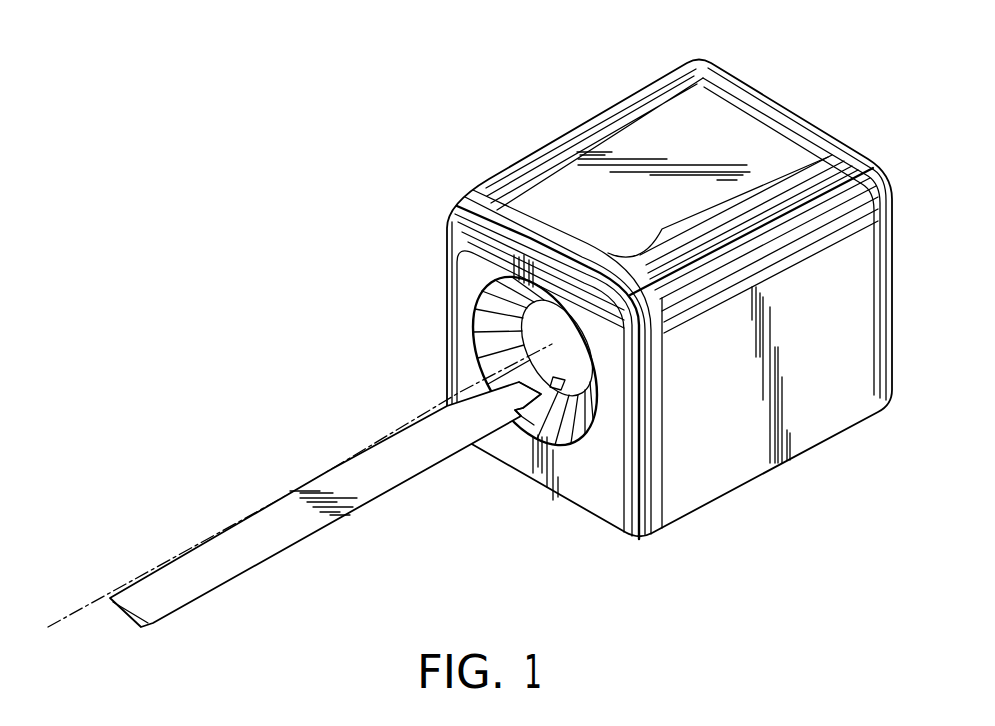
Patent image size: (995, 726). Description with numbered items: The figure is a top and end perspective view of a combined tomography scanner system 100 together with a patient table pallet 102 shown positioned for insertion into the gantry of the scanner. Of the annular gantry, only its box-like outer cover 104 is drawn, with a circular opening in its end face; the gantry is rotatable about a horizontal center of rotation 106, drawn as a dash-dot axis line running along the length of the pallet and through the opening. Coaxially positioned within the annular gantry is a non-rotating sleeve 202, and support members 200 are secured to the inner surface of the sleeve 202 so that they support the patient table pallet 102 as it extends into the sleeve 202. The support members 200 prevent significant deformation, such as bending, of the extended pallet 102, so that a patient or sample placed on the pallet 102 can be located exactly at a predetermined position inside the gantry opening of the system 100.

The combined tomography scanner system 100 is at (812, 78).
The patient table pallet 102 is at (232, 568).
The outer cover 104 is at (610, 458).
The horizontal center of rotation 106 is at (84, 603).
The support members 200 is at (531, 443).
The non-rotating sleeve 202 is at (533, 318).